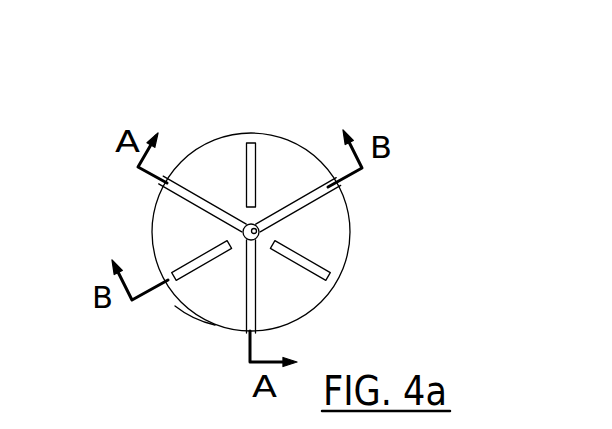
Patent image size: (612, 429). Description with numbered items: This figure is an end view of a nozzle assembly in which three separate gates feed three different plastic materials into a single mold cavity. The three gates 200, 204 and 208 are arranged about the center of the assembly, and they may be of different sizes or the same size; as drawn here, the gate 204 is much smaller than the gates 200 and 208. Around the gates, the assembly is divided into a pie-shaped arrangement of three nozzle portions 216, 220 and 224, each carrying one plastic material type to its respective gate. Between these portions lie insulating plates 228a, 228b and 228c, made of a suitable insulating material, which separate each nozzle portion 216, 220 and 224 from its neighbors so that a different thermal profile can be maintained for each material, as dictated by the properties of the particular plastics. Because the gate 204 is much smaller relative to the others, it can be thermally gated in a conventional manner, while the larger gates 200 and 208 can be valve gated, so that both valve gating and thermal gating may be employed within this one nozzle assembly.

The gate 200 is at (262, 230).
The gate 204 is at (240, 228).
The gate 208 is at (247, 246).
The nozzle portion 216 is at (148, 206).
The nozzle portion 220 is at (368, 227).
The nozzle portion 224 is at (196, 328).
The insulating plate 228a is at (316, 268).
The insulating plate 228b is at (257, 164).
The insulating plate 228c is at (190, 276).